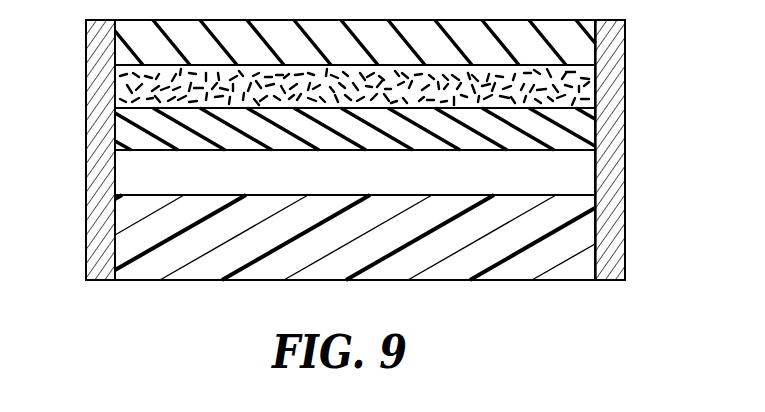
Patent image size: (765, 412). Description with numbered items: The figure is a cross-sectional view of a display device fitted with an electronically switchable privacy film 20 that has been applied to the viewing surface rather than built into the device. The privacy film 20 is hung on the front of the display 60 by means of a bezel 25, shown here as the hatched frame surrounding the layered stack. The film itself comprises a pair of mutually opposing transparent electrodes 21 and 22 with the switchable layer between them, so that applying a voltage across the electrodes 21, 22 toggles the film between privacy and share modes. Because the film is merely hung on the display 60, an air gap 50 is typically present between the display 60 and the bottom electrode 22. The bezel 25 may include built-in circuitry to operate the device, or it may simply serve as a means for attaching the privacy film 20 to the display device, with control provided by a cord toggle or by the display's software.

The electronically switchable privacy film 20 is at (350, 87).
The transparent electrode 21 is at (593, 44).
The bezel 25 is at (610, 87).
The transparent electrode 22 is at (592, 132).
The air gap 50 is at (592, 172).
The display 60 is at (592, 230).